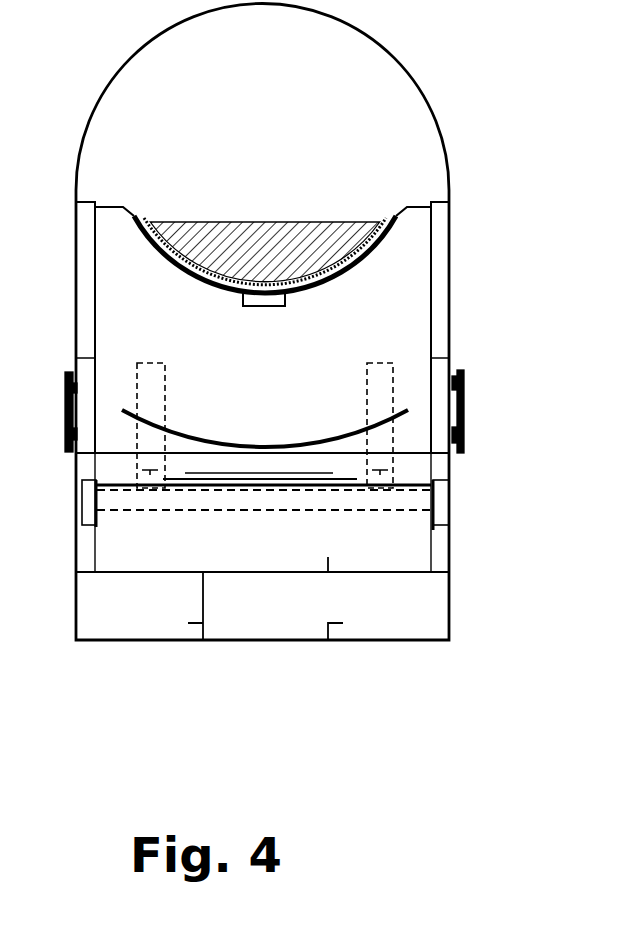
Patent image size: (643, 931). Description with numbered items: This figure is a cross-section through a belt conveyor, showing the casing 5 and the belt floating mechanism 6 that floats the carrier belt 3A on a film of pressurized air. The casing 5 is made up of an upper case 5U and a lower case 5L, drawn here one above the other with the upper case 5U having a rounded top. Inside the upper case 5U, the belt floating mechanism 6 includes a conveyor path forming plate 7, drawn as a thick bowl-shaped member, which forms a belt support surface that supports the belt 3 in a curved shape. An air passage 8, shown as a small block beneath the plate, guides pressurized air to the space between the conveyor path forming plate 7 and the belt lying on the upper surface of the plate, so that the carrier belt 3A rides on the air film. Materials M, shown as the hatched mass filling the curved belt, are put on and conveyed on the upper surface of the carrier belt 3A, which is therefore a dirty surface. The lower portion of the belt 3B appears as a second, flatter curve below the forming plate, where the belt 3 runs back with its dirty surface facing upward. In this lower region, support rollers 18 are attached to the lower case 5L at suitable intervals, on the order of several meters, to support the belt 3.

The belt 3 is at (265, 261).
The carrier belt 3A is at (181, 254).
The lower sheet portion 3B is at (284, 444).
The materials M is at (262, 238).
The casing 5 is at (350, 322).
The upper case 5U is at (451, 323).
The lower case 5L is at (326, 511).
The belt floating mechanism 6 is at (265, 302).
The conveyor path forming plate 7 is at (357, 257).
The air passage 8 is at (251, 308).
The support rollers 18 is at (262, 465).